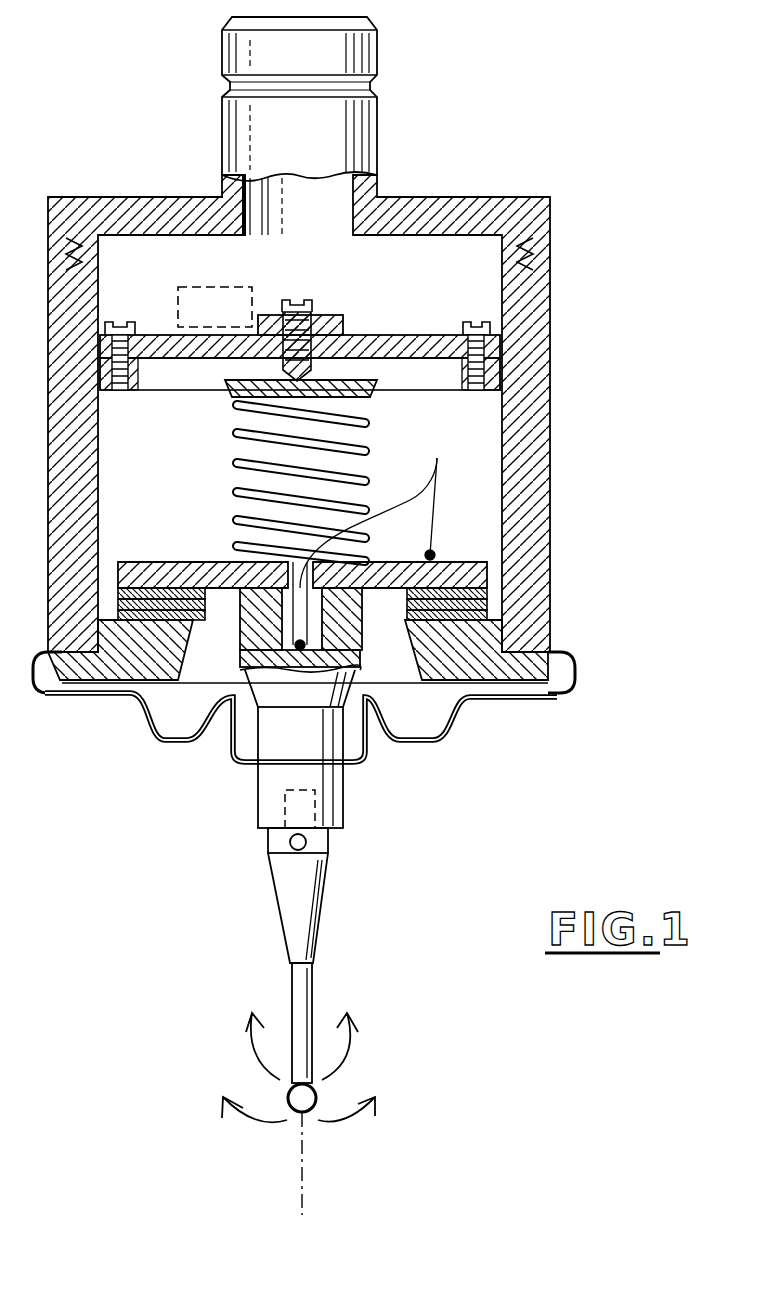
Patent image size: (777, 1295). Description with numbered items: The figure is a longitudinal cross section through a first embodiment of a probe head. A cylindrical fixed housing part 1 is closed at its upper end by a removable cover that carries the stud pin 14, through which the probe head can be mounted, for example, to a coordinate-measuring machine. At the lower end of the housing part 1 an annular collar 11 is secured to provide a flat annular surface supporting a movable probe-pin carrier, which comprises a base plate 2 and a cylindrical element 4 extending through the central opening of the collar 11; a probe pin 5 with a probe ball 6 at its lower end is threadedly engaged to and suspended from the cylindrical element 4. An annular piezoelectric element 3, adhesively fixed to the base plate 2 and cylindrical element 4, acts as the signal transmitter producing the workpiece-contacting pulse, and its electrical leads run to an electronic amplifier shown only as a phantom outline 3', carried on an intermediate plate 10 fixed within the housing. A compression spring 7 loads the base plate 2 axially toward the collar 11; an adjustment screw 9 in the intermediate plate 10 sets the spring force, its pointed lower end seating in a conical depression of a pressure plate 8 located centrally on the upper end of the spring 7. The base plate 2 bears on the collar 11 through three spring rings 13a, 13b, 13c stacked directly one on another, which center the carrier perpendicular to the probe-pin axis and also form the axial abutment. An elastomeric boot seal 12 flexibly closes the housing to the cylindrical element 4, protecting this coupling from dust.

The housing part 1 is at (545, 372).
The base plate 2 is at (470, 562).
The piezoelectric element 3 is at (264, 611).
The electronic amplifier 3' is at (223, 287).
The cylindrical element 4 is at (343, 800).
The probe pin 5 is at (303, 997).
The probe ball 6 is at (307, 1113).
The compression spring 7 is at (235, 466).
The pressure plate 8 is at (232, 400).
The adjustment screw 9 is at (300, 300).
The intermediate plate 10 is at (383, 338).
The annular collar 11 is at (440, 667).
The boot seal 12 is at (465, 713).
The spring ring 13a is at (487, 592).
The spring ring 13b is at (487, 602).
The spring ring 13c is at (487, 612).
The stud pin 14 is at (363, 125).